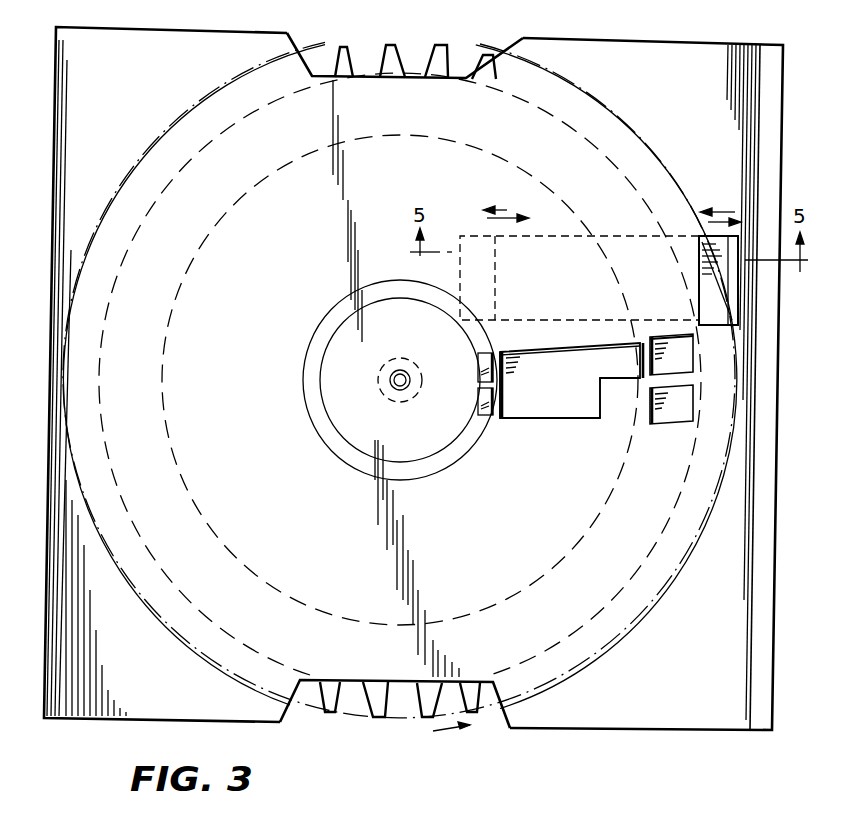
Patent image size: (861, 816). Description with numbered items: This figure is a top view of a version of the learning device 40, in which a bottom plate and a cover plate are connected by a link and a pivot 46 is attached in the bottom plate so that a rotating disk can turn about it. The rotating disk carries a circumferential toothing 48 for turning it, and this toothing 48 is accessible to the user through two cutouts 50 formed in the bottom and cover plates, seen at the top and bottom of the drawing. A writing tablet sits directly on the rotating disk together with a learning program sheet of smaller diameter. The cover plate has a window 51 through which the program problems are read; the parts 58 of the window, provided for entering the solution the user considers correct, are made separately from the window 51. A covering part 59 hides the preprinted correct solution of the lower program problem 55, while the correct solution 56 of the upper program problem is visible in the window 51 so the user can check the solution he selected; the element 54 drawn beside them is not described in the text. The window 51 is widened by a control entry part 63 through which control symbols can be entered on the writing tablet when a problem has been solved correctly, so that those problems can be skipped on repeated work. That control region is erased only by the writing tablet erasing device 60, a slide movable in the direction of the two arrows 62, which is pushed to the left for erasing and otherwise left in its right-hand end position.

The device 40 is at (119, 729).
The pivot 46 is at (403, 372).
The circumferential toothing 48 is at (441, 54).
The cutouts 50 is at (514, 45).
The window 51 is at (550, 419).
The display left edge 54 is at (516, 378).
The lower program problem 55 is at (528, 408).
The correct solution of the upper program problem 56 is at (597, 350).
The parts of the window for entry of the solution 58 is at (663, 368).
The covering part 59 is at (616, 393).
The writing tablet erasing device 60 is at (637, 238).
The arrows 62 is at (727, 222).
The control entry part 63 is at (487, 368).